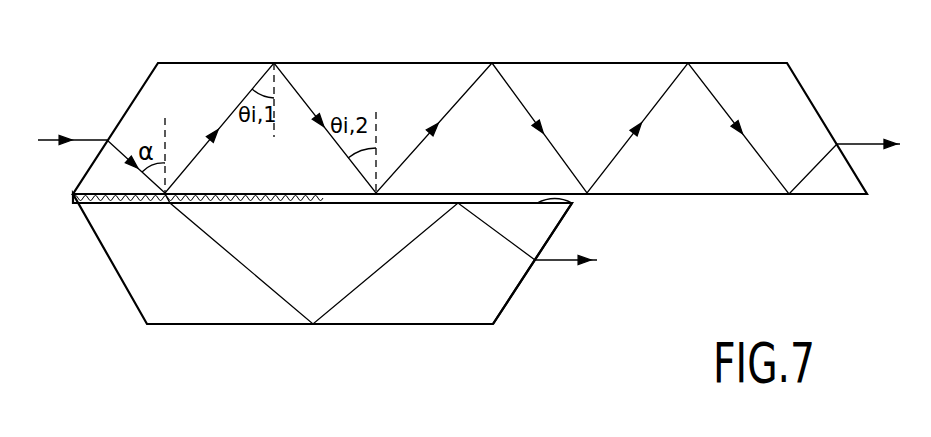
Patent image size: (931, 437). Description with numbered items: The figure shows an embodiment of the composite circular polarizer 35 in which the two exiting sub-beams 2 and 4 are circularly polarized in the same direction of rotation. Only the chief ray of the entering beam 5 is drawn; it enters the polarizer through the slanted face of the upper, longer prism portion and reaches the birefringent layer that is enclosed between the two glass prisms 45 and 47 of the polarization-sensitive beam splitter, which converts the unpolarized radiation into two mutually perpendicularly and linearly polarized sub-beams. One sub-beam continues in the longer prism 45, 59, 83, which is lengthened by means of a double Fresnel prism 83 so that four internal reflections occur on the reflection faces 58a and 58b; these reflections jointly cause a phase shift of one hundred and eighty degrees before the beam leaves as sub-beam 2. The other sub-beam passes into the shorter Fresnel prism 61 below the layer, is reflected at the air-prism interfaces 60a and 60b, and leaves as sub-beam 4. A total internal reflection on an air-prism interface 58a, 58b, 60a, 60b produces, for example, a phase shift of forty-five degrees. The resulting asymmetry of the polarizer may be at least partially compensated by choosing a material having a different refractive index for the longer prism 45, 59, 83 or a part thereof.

The exiting sub-beam 2 is at (858, 142).
The exiting sub-beam 4 is at (552, 263).
The entering beam 5 is at (98, 141).
The composite circular polarizer 35 is at (142, 345).
The glass prism 45 is at (207, 80).
The glass prism 47 is at (208, 310).
The reflection face 58a is at (761, 63).
The reflection face 58b is at (767, 195).
The Fresnel prism 59 is at (418, 80).
The air-prism interface 60a is at (487, 325).
The air-prism interface 60b is at (572, 203).
The Fresnel prism 61 is at (373, 308).
The double Fresnel prism 83 is at (595, 77).